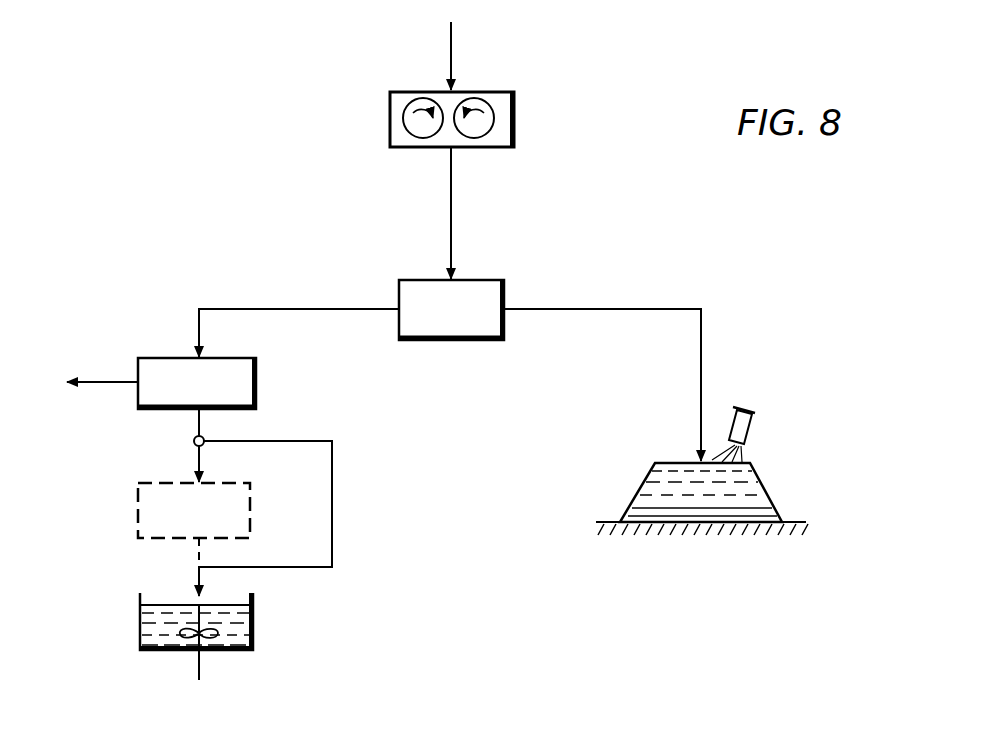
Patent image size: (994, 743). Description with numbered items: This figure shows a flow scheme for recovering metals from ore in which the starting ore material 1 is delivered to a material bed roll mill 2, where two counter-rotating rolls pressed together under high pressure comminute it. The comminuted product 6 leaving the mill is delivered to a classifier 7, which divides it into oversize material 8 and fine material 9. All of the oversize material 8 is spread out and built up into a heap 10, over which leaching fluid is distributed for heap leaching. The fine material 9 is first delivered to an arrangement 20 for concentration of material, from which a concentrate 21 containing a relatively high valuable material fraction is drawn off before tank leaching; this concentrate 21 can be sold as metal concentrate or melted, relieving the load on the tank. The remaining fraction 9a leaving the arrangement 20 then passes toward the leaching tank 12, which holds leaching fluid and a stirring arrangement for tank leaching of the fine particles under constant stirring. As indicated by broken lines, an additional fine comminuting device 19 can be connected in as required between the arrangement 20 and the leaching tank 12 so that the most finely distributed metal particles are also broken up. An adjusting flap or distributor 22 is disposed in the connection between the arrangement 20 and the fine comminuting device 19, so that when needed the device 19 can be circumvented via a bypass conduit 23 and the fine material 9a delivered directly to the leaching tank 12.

The starting ore material 1 is at (451, 44).
The material bed roll mill 2 is at (516, 112).
The comminuted product 6 is at (451, 208).
The classifier 7 is at (508, 290).
The oversize material 8 is at (672, 309).
The fine material 9 is at (250, 309).
The remaining fraction 9a is at (199, 423).
The heap 10 is at (767, 484).
The leaching tank 12 is at (259, 625).
The fine comminuting device 19 is at (136, 512).
The arrangement for concentration of material 20 is at (259, 381).
The concentrate 21 is at (100, 382).
The adjusting flap or distributor 22 is at (193, 441).
The bypass conduit 23 is at (332, 520).